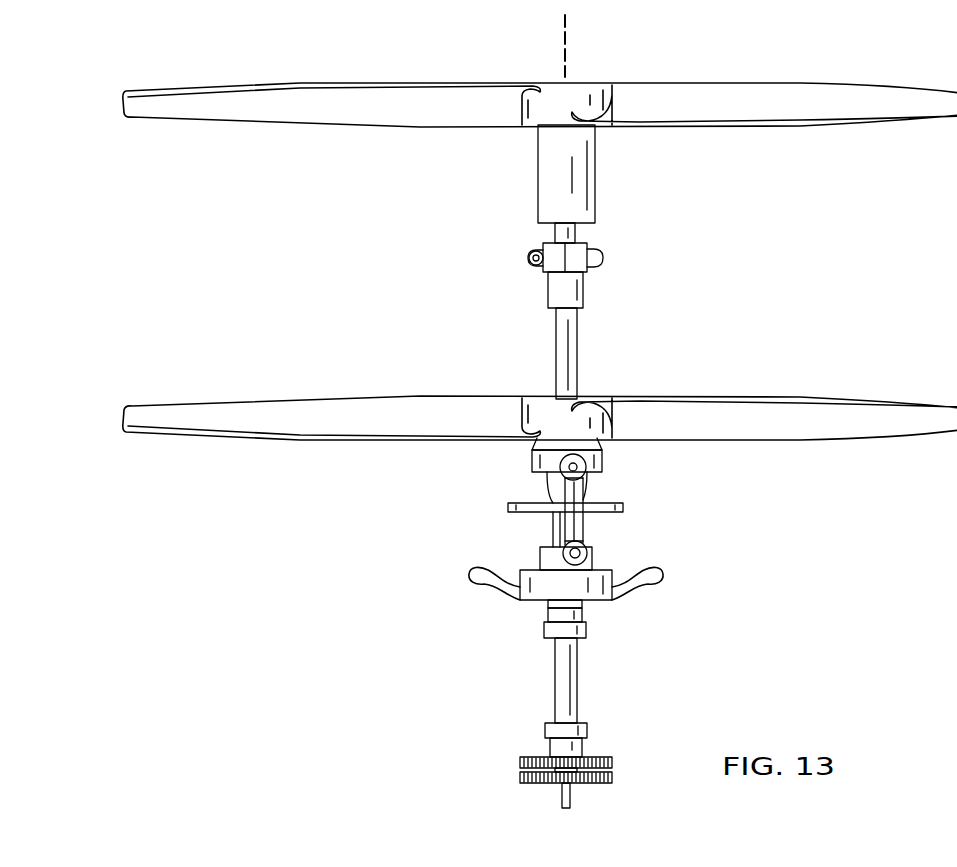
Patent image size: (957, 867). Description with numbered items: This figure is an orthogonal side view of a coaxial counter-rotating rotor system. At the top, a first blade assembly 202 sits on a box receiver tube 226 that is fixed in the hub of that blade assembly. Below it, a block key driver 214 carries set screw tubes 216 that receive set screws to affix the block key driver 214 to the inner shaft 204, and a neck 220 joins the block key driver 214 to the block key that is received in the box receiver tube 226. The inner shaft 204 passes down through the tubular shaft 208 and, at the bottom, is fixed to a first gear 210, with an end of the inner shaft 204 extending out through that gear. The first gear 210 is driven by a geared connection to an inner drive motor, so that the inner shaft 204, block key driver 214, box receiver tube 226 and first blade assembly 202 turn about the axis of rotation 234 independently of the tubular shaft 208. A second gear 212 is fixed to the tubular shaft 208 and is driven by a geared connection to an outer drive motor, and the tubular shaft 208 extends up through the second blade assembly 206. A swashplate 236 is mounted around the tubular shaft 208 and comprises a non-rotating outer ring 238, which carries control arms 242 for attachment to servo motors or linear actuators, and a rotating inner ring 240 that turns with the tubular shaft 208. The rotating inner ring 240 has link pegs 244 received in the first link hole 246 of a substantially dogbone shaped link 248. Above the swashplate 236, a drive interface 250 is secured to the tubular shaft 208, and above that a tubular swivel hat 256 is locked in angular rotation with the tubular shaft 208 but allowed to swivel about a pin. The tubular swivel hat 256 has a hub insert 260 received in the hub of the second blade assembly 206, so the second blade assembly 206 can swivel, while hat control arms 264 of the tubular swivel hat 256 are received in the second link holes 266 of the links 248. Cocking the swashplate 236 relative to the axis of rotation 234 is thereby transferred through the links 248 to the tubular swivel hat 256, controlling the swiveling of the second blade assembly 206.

The first blade assembly 202 is at (598, 90).
The inner shaft 204 is at (562, 798).
The second blade assembly 206 is at (592, 396).
The tubular shaft 208 is at (577, 680).
The first gear 210 is at (612, 778).
The second gear 212 is at (612, 762).
The block key driver 214 is at (562, 292).
The set screw tubes 216 is at (528, 257).
The neck 220 is at (577, 233).
The box receiver tube 226 is at (596, 175).
The axis of rotation 234 is at (562, 68).
The swashplate 236 is at (520, 618).
The non-rotating outer ring 238 is at (603, 601).
The rotating inner ring 240 is at (540, 556).
The control arms 242 is at (478, 586).
The link pegs 244 is at (590, 557).
The first link hole 246 is at (583, 540).
The link 248 is at (588, 485).
The drive interface 250 is at (508, 507).
The tubular swivel hat 256 is at (532, 470).
The hub insert 260 is at (535, 442).
The hat control arms 264 is at (582, 500).
The second link holes 266 is at (590, 456).